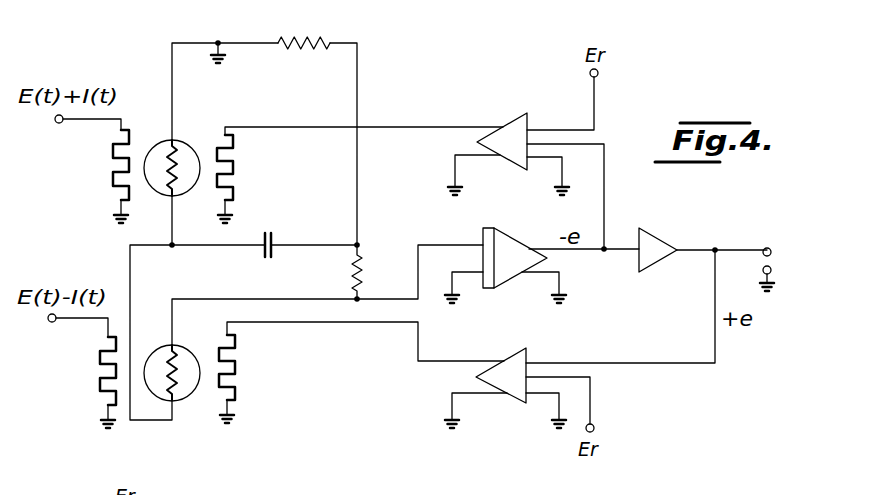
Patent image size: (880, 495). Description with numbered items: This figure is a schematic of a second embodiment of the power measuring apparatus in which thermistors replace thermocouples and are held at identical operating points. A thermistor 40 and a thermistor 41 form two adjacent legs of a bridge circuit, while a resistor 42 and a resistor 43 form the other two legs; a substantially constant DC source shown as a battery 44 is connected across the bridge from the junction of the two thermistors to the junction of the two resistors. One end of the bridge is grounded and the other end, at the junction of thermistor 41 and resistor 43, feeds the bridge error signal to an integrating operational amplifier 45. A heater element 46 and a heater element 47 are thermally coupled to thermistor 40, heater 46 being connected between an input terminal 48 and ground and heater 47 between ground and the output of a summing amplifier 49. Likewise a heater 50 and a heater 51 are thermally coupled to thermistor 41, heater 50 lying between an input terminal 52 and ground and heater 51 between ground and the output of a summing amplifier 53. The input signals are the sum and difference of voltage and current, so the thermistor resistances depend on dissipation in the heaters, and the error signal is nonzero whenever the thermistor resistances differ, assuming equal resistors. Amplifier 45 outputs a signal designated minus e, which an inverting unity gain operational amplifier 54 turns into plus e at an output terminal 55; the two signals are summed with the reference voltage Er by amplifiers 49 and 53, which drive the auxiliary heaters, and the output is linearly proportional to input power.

The thermistor 40 is at (176, 142).
The thermistor 41 is at (184, 400).
The resistor 42 is at (311, 50).
The resistor 43 is at (351, 262).
The battery 44 is at (272, 237).
The integrating operational amplifier 45 is at (507, 286).
The heater element 46 is at (112, 172).
The heater element 47 is at (233, 178).
The input terminal 48 is at (56, 122).
The summing amplifier 49 is at (510, 120).
The heater 50 is at (100, 369).
The heater 51 is at (236, 372).
The input terminal 52 is at (49, 321).
The summing amplifier 53 is at (508, 400).
The operational amplifier 54 is at (651, 228).
The output terminal 55 is at (767, 248).